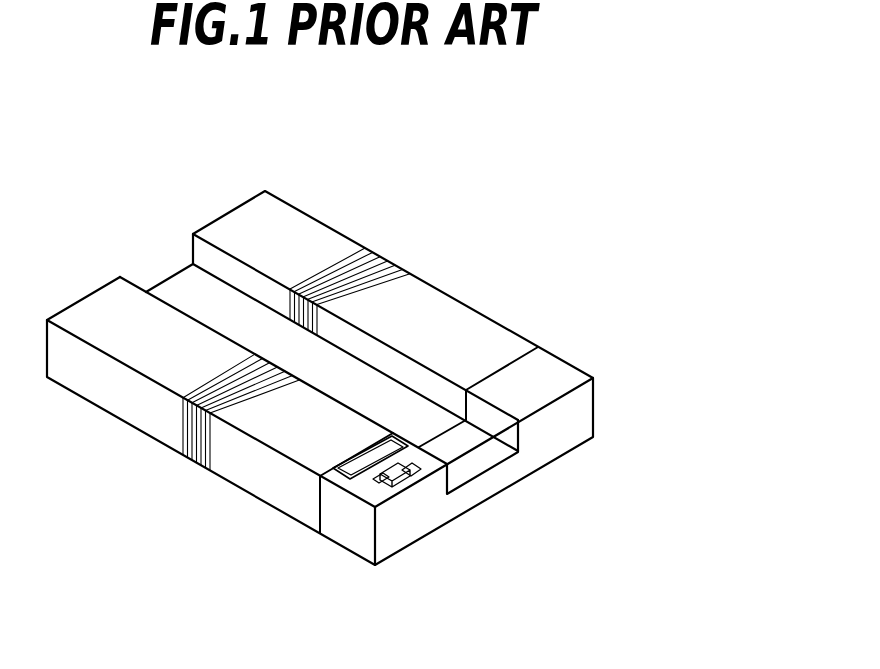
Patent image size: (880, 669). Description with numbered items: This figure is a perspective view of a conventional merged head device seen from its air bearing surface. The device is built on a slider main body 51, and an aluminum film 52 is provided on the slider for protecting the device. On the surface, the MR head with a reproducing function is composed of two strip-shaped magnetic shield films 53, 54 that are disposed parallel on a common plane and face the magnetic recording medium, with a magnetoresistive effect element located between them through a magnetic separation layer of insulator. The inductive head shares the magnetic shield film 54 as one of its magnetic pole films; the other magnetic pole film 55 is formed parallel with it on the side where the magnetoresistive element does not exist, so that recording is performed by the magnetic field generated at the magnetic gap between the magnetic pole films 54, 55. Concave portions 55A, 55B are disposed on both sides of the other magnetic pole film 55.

The slider main body 51 is at (233, 220).
The aluminum film 52 is at (320, 503).
The magnetic shield film 53 is at (355, 452).
The magnetic shield film 54 is at (400, 445).
The magnetic pole film 55 is at (400, 482).
The concave portion 55A is at (380, 479).
The concave portion 55B is at (418, 467).